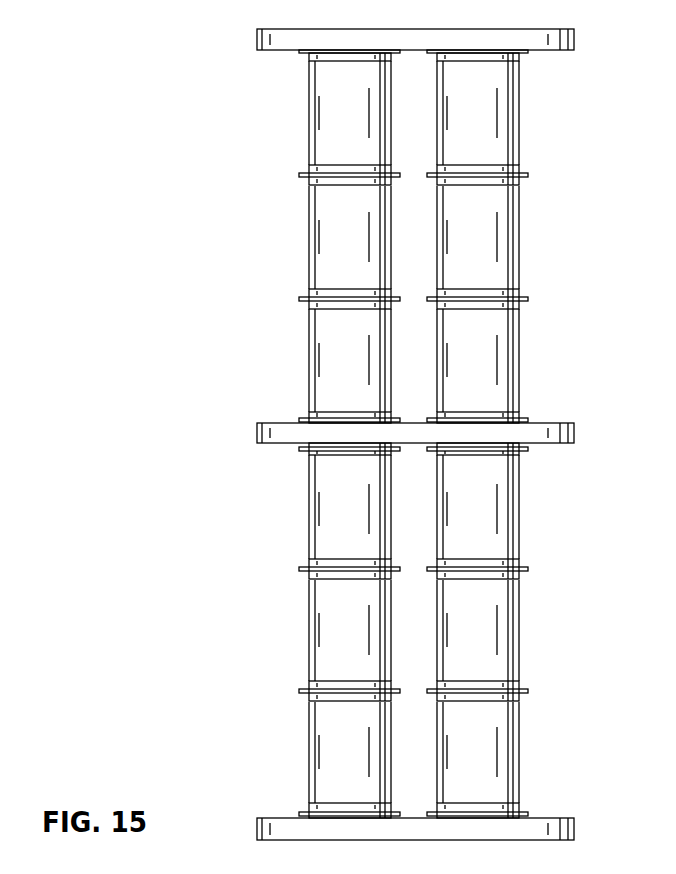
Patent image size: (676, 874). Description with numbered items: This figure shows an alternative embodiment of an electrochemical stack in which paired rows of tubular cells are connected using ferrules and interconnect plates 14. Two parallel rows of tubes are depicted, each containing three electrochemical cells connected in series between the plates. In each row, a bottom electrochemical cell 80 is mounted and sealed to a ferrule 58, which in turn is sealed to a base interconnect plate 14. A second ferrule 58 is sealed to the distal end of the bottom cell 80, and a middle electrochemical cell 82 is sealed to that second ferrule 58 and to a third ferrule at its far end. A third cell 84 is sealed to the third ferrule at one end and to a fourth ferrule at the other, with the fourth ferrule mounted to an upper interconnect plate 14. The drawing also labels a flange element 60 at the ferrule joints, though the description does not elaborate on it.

The interconnect plate 14 is at (257, 43).
The ferrule 58 is at (532, 162).
The flange plate 60 is at (530, 177).
The bottom electrochemical cell 80 is at (327, 360).
The middle electrochemical cell 82 is at (327, 248).
The third cell 84 is at (327, 116).